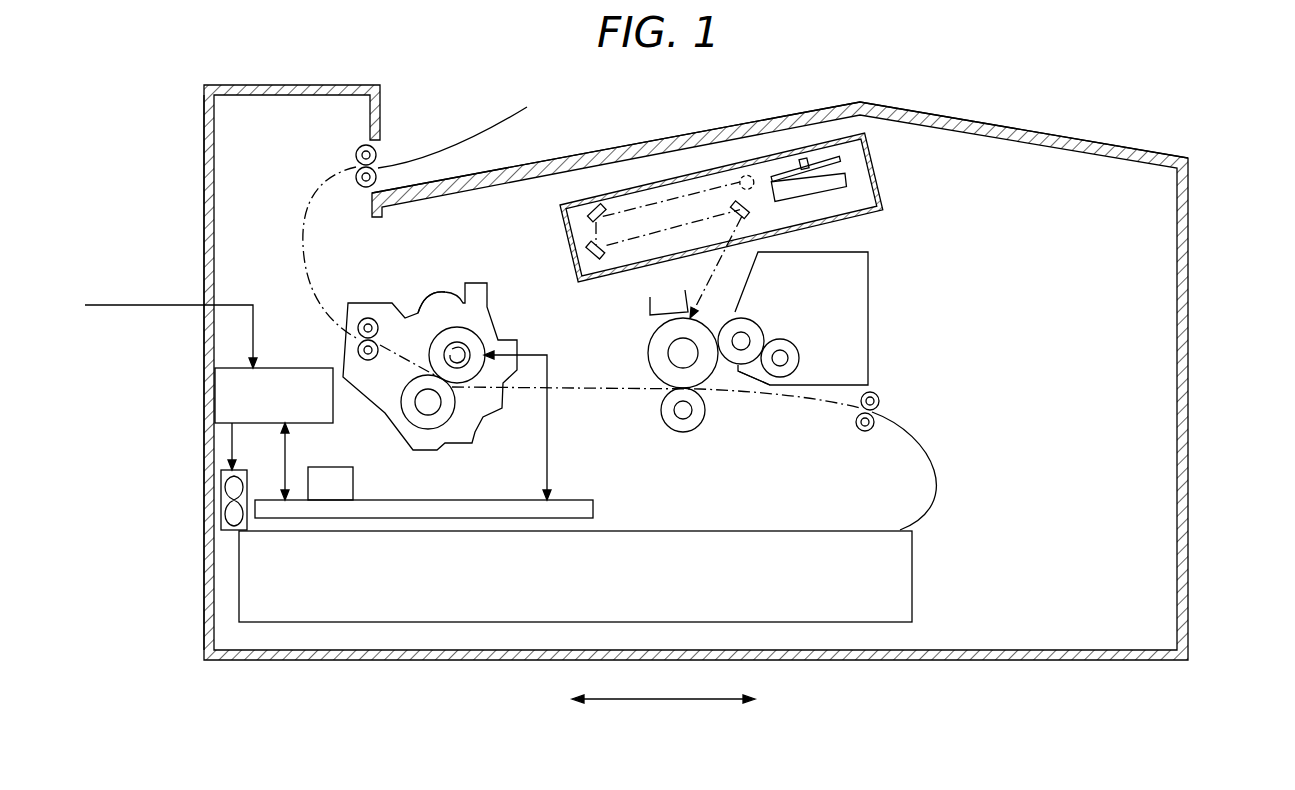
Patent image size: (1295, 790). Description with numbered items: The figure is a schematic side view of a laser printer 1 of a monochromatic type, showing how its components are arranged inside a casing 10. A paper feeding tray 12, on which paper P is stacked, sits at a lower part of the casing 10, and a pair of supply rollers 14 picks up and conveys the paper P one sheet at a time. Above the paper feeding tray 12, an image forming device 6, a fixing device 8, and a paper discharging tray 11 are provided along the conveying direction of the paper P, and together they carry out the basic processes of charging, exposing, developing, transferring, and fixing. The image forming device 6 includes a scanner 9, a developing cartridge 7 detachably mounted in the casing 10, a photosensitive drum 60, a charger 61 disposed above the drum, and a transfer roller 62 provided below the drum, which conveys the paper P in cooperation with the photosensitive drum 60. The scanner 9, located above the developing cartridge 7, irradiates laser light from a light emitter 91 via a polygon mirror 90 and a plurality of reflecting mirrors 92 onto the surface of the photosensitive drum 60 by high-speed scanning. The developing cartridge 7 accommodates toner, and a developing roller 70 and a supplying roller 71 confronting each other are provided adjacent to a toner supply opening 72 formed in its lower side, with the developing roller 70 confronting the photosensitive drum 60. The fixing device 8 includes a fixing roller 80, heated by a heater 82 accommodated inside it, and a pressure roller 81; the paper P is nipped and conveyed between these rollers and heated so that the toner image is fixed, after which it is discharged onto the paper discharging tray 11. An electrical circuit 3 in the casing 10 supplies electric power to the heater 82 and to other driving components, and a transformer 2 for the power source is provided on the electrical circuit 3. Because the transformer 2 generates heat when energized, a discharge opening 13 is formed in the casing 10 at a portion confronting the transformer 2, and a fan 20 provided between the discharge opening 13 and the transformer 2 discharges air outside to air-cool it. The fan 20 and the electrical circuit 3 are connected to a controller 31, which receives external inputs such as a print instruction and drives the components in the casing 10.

The laser printer 1 is at (1206, 263).
The casing 10 is at (1190, 484).
The paper discharging tray 11 is at (612, 148).
The discharge opening 13 is at (205, 465).
The fan 20 is at (221, 505).
The controller 31 is at (290, 368).
The electrical circuit 3 is at (587, 500).
The transformer 2 is at (340, 467).
The paper feeding tray 12 is at (912, 563).
The pair of supply rollers 14 is at (880, 400).
The paper P is at (482, 133).
The fixing device 8 is at (442, 335).
The fixing roller 80 is at (472, 332).
The pressure roller 81 is at (440, 402).
The heater 82 is at (418, 313).
The photosensitive drum 60 is at (648, 352).
The charger 61 is at (648, 306).
The transfer roller 62 is at (683, 432).
The image forming device 6 is at (845, 250).
The scanner 9 is at (736, 189).
The polygon mirror 90 is at (807, 176).
The light emitter 91 is at (746, 182).
The reflecting mirrors 92 is at (664, 216).
The developing cartridge 7 is at (835, 345).
The developing roller 70 is at (752, 322).
The supplying roller 71 is at (800, 358).
The toner supply opening 72 is at (739, 372).